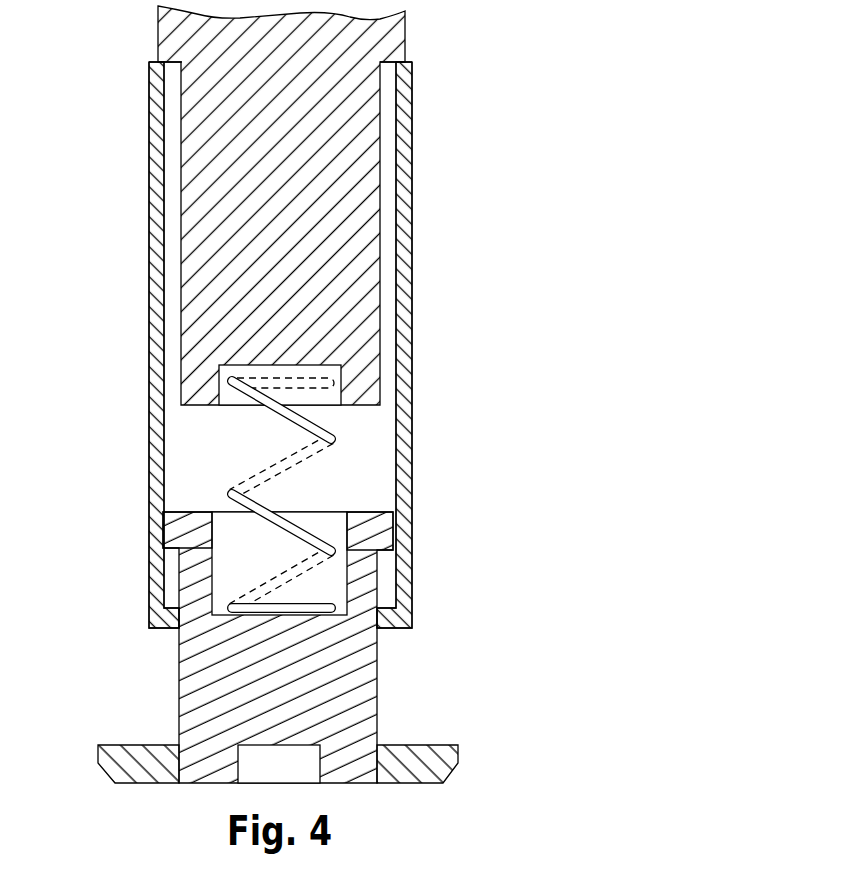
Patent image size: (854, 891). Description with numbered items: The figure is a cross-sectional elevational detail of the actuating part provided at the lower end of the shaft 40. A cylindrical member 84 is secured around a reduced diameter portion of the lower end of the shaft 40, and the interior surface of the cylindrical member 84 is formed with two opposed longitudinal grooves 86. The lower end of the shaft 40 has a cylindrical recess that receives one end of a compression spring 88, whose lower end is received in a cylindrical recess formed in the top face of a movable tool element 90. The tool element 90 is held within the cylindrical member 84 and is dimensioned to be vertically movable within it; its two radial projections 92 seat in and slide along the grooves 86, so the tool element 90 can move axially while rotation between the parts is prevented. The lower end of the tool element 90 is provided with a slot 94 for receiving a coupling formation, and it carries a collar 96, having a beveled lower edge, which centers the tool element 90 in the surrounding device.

The shaft 40 is at (382, 45).
The cylindrical member 84 is at (408, 142).
The longitudinal grooves 86 is at (175, 207).
The compression spring 88 is at (253, 475).
The movable tool element 90 is at (193, 697).
The radial projections 92 is at (178, 530).
The slot 94 is at (253, 762).
The collar 96 is at (410, 753).